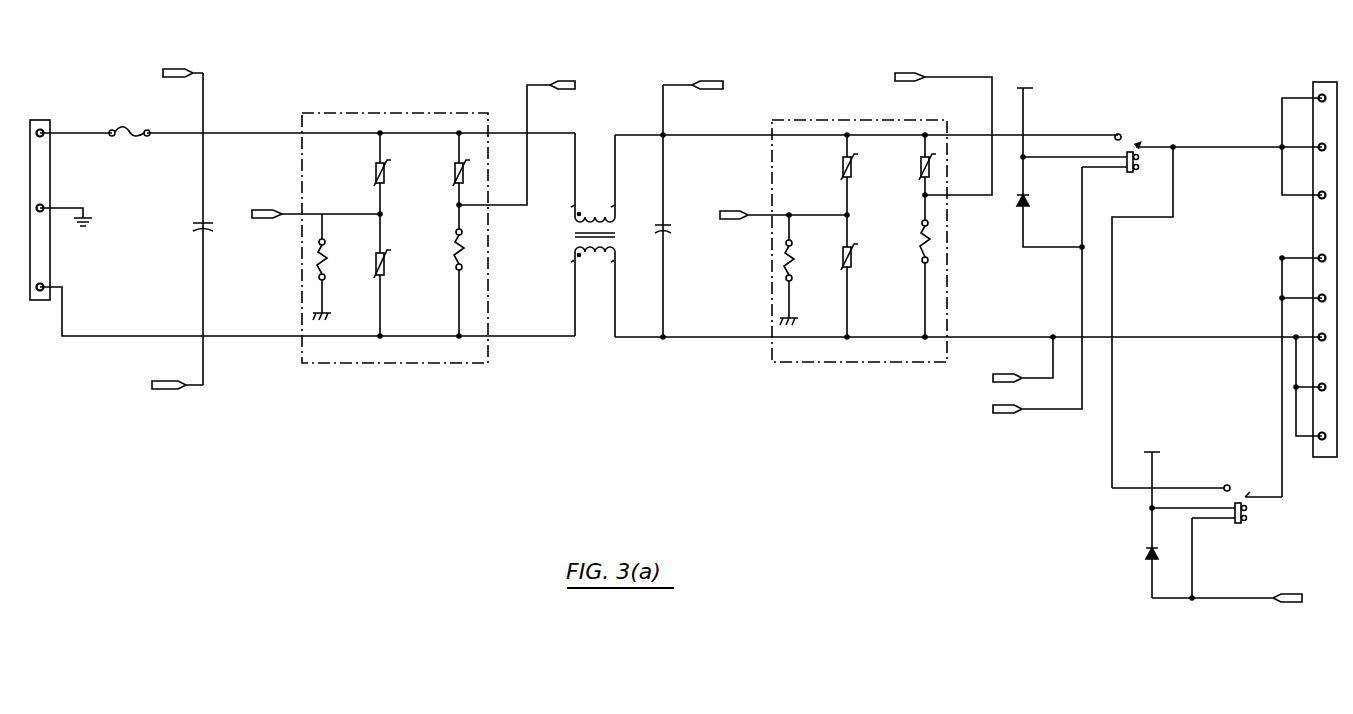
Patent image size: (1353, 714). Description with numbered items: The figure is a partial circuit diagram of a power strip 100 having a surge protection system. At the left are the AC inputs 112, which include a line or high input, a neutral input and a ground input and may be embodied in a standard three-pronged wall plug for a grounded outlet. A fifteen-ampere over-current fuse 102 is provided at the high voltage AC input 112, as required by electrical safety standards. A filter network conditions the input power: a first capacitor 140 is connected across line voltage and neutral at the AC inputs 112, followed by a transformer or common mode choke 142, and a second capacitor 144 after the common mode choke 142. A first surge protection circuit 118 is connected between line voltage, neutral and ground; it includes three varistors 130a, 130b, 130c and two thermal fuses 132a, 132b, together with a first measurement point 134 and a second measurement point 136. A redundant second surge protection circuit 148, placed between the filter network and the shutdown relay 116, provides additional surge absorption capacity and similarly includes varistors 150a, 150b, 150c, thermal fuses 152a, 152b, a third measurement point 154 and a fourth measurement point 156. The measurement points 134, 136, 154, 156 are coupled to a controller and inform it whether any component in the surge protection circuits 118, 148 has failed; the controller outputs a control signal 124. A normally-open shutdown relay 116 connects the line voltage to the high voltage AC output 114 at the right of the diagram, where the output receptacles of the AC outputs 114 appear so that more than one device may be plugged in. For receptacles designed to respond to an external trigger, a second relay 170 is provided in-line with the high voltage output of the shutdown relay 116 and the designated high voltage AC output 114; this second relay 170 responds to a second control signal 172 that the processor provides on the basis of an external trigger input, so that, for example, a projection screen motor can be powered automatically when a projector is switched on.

The power strip 100 is at (185, 514).
The over-current fuse 102 is at (131, 138).
The AC inputs 112 is at (42, 120).
The AC outputs 114 is at (1320, 82).
The shutdown relay 116 is at (1146, 123).
The first surge protection circuit 118 is at (380, 364).
The control signal 124 is at (1000, 416).
The varistor 130a is at (385, 178).
The varistor 130b is at (384, 276).
The varistor 130c is at (456, 189).
The thermal fuse 132a is at (326, 243).
The thermal fuse 132b is at (455, 268).
The first measurement point 134 is at (262, 219).
The second measurement point 136 is at (563, 91).
The first capacitor 140 is at (197, 222).
The common mode choke 142 is at (593, 326).
The second capacitor 144 is at (668, 221).
The second surge protection circuit 148 is at (812, 363).
The varistor 150a is at (851, 170).
The varistor 150b is at (851, 268).
The varistor 150c is at (925, 181).
The thermal fuse 152a is at (793, 244).
The thermal fuse 152b is at (919, 267).
The third measurement point 154 is at (730, 221).
The fourth measurement point 156 is at (905, 80).
The second relay 170 is at (1234, 446).
The second control signal 172 is at (1293, 608).